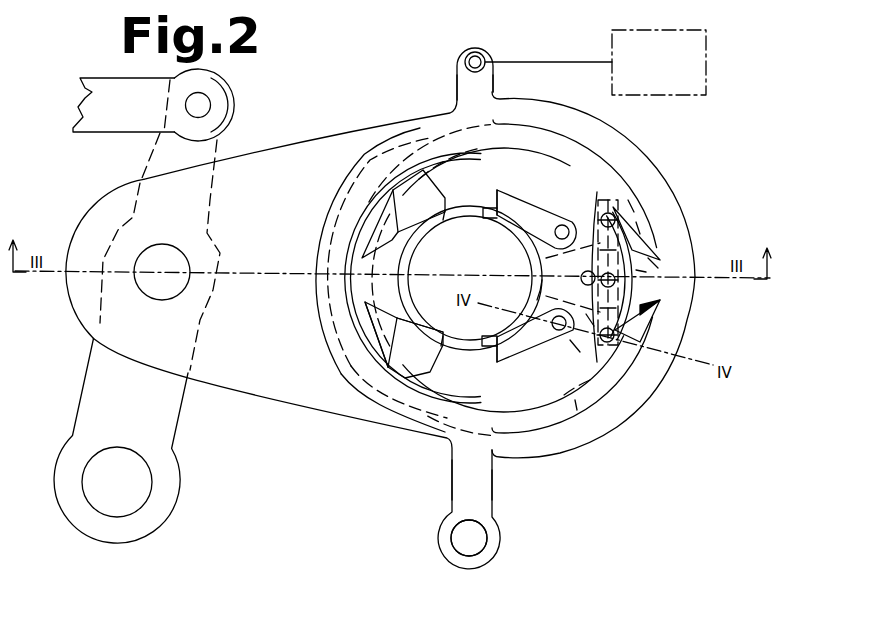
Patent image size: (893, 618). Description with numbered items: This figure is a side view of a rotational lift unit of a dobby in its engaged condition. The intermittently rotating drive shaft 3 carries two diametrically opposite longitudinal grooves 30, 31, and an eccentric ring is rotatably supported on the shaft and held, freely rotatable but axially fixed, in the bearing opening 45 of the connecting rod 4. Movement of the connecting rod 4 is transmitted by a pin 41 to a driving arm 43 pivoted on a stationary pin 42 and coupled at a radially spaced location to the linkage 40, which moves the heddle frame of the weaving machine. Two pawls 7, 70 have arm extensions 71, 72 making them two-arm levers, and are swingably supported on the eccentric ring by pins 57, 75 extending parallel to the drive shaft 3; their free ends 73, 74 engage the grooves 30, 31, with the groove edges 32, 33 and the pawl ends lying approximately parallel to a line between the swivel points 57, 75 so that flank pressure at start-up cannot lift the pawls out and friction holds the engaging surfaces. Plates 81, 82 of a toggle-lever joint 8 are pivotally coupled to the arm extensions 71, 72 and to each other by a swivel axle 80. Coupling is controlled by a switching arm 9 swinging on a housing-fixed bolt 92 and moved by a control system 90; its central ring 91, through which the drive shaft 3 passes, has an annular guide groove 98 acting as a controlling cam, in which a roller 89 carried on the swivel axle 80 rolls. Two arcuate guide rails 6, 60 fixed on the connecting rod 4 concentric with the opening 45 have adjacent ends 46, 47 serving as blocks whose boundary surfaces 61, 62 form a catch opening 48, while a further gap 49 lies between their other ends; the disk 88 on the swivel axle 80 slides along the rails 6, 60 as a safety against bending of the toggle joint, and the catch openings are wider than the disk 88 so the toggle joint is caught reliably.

The drive shaft 3 is at (380, 325).
The connecting rod 4 is at (283, 178).
The guide rail 6 is at (410, 183).
The pawl 7 is at (533, 220).
The toggle-lever joint 8 is at (658, 305).
The switching arm 9 is at (470, 82).
The longitudinal groove 30 is at (542, 267).
The longitudinal groove 31 is at (432, 300).
The groove edge 32 is at (493, 215).
The groove edge 33 is at (493, 340).
The linkage 40 is at (117, 93).
The pin 41 is at (160, 287).
The stationary pin 42 is at (130, 495).
The driving arm 43 is at (170, 158).
The bearing opening 45 is at (380, 283).
The guide rail end 46 is at (653, 263).
The guide rail end 47 is at (650, 300).
The catch opening 48 is at (647, 287).
The gap 49 is at (373, 263).
The pin 57 is at (605, 202).
The guide rail 60 is at (382, 327).
The boundary surface 61 is at (661, 259).
The boundary surface 62 is at (632, 312).
The pawl 70 is at (517, 347).
The arm extension 71 is at (630, 205).
The arm extension 72 is at (590, 320).
The free end 73 is at (493, 190).
The free end 74 is at (493, 363).
The pin 75 is at (575, 347).
The swivel axle 80 is at (531, 253).
The plate 81 is at (633, 227).
The plate 82 is at (617, 360).
The disk 88 is at (545, 285).
The roller 89 is at (640, 270).
The control system 90 is at (648, 50).
The ring 91 is at (328, 322).
The stationary bolt 92 is at (478, 545).
The guide groove 98 is at (373, 178).